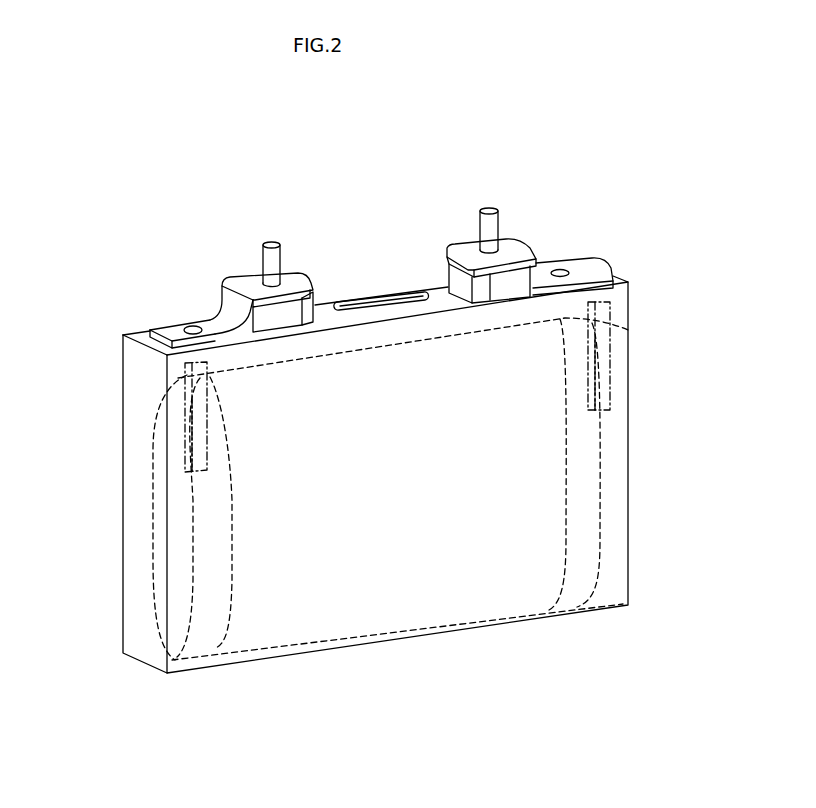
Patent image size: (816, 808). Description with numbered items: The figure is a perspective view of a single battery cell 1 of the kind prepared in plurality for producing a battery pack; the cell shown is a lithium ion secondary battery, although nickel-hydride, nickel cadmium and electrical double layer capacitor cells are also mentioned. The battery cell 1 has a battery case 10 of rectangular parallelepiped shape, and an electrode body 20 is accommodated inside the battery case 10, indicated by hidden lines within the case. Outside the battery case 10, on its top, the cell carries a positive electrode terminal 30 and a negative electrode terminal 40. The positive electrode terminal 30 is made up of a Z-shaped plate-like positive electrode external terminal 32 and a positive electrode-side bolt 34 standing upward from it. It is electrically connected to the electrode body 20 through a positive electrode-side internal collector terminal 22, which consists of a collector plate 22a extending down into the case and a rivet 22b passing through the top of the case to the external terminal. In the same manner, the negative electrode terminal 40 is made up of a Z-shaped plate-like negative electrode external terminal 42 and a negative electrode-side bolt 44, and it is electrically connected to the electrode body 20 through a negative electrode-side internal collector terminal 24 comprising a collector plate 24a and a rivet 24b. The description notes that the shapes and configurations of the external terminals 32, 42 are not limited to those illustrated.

The battery cell 1 is at (637, 110).
The battery case 10 is at (631, 300).
The electrode body 20 is at (332, 640).
The positive electrode-side internal collector terminal 22 is at (603, 335).
The collector plate 22a is at (600, 386).
The rivet 22b is at (560, 271).
The negative electrode-side internal collector terminal 24 is at (187, 413).
The collector plate 24a is at (197, 457).
The rivet 24b is at (190, 326).
The positive electrode terminal 30 is at (541, 237).
The positive electrode external terminal 32 is at (467, 250).
The positive electrode-side bolt 34 is at (487, 226).
The negative electrode terminal 40 is at (197, 281).
The negative electrode external terminal 42 is at (243, 283).
The negative electrode-side bolt 44 is at (278, 258).